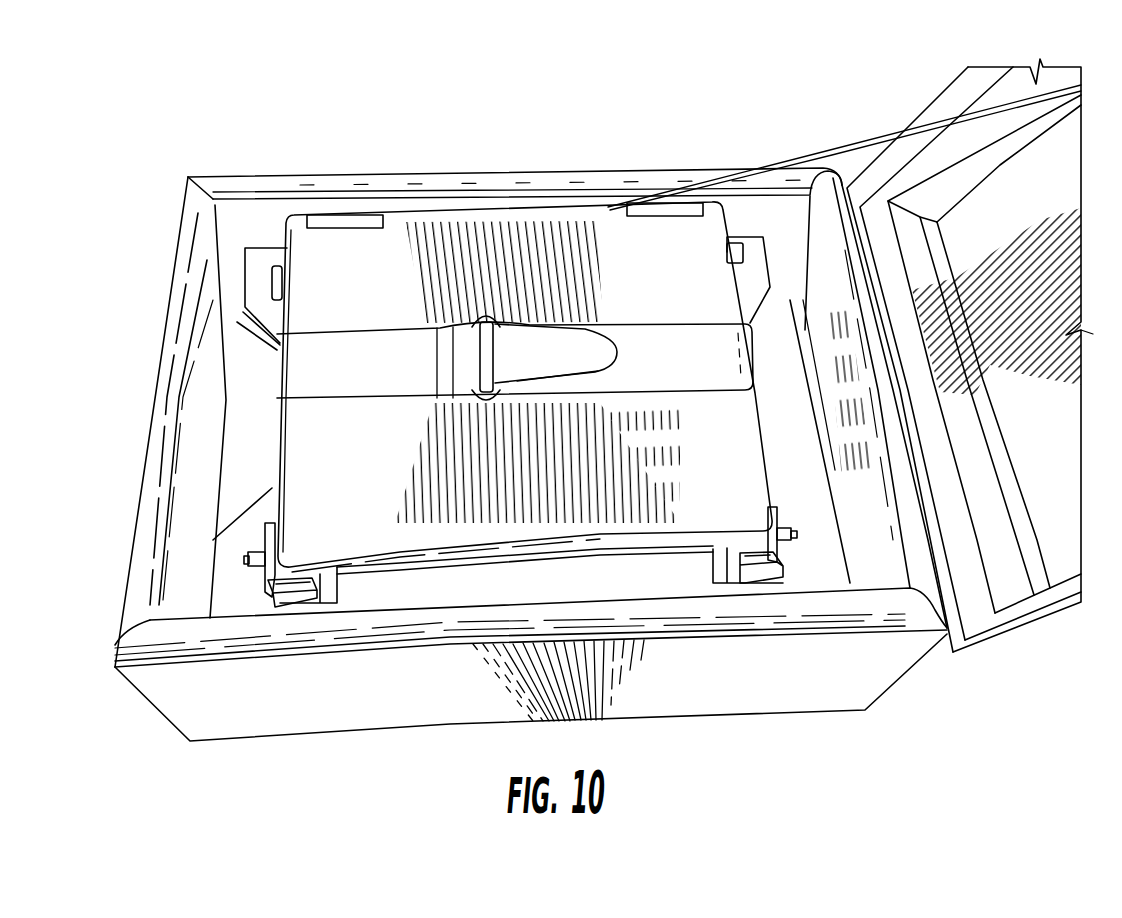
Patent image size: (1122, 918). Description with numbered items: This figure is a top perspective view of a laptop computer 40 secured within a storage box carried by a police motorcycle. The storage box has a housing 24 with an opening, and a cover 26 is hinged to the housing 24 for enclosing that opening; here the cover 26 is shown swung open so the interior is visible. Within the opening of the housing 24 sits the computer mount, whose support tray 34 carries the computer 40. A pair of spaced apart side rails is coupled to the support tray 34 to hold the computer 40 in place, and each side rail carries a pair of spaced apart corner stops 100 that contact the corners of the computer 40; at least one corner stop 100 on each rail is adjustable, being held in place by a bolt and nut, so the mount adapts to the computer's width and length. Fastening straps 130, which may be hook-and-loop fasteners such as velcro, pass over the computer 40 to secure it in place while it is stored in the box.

The housing 24 is at (172, 327).
The cover 26 is at (958, 98).
The computer 40 is at (613, 258).
The fastening straps 130 is at (380, 352).
The support tray 34 is at (470, 582).
The corner stops 100 is at (293, 590).